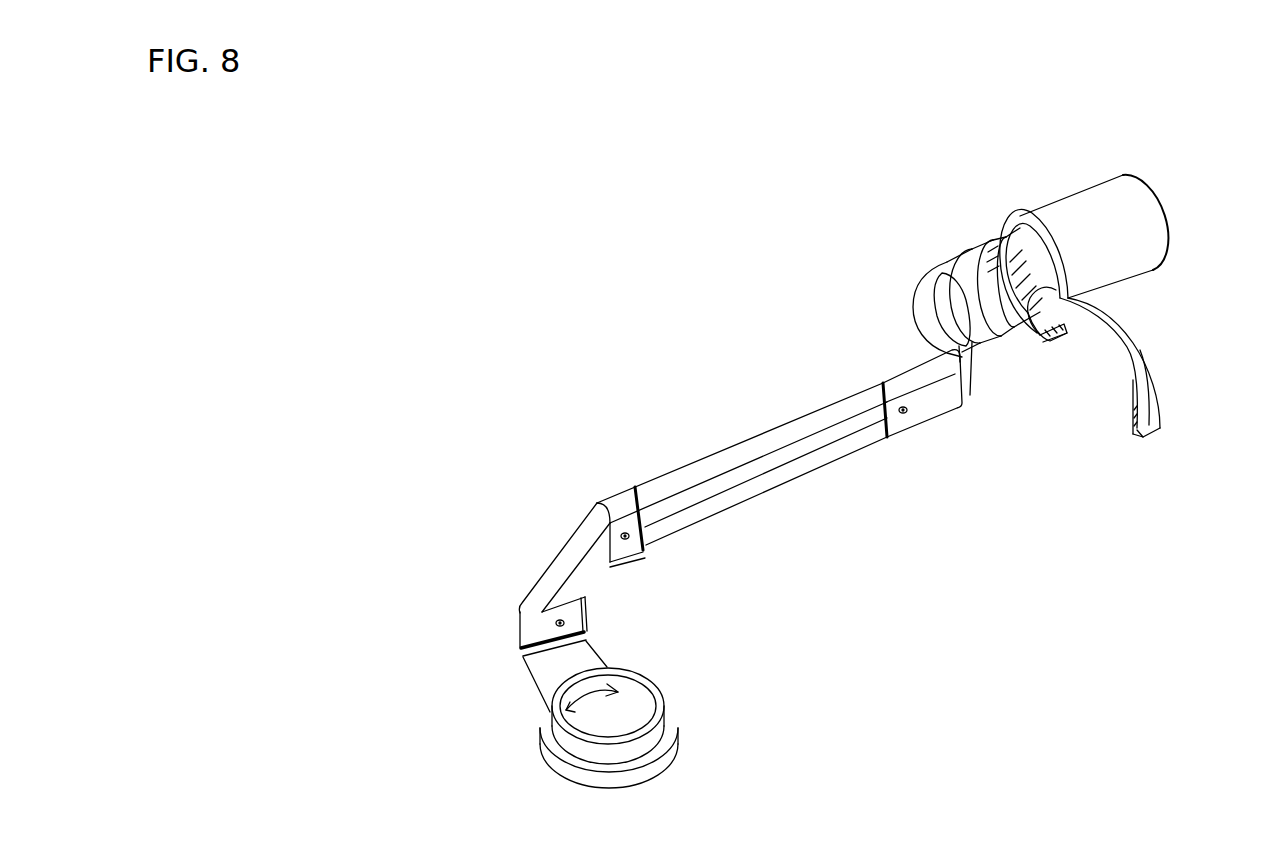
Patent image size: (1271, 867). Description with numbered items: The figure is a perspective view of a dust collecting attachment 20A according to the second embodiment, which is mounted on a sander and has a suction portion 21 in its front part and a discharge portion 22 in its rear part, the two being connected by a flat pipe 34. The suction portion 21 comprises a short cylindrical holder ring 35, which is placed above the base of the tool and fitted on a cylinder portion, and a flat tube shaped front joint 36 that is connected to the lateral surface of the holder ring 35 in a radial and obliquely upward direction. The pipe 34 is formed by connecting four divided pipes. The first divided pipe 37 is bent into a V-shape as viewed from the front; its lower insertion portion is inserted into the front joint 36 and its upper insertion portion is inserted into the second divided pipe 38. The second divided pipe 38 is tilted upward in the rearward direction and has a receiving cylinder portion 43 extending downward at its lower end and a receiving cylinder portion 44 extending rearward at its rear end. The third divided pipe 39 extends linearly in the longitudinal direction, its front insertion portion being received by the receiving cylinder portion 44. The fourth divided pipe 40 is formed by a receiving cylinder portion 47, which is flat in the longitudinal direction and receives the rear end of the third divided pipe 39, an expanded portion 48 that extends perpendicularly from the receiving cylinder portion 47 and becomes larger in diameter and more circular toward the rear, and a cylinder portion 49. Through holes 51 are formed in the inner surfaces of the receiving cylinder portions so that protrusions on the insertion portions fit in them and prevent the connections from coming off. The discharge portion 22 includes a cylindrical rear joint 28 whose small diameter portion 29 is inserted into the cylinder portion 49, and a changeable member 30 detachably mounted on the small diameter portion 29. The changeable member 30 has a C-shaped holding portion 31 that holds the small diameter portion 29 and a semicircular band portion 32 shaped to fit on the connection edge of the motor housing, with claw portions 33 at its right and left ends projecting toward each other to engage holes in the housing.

The dust collecting attachment 20A is at (733, 353).
The suction portion 21 is at (670, 685).
The discharge portion 22 is at (1013, 212).
The rear joint 28 is at (1092, 188).
The small diameter portion 29 is at (973, 247).
The changeable member 30 is at (1115, 341).
The holding portion 31 is at (990, 236).
The band portion 32 is at (1148, 379).
The claw portion 33 is at (1062, 338).
The pipe 34 is at (697, 520).
The holder ring 35 is at (655, 737).
The front joint 36 is at (543, 678).
The first divided pipe 37 is at (523, 656).
The second divided pipe 38 is at (572, 553).
The third divided pipe 39 is at (787, 432).
The fourth divided pipe 40 is at (944, 313).
The receiving cylinder portion 43 is at (525, 630).
The receiving cylinder portion 44 is at (613, 503).
The receiving cylinder portion 47 is at (898, 378).
The expanded portion 48 is at (969, 343).
The cylinder portion 49 is at (952, 257).
The through hole 51 is at (628, 540).